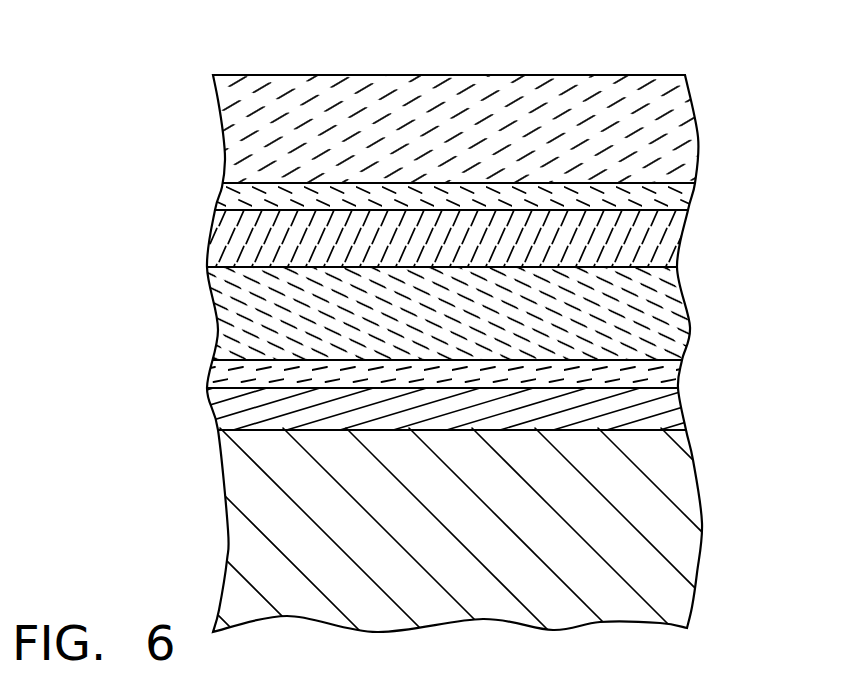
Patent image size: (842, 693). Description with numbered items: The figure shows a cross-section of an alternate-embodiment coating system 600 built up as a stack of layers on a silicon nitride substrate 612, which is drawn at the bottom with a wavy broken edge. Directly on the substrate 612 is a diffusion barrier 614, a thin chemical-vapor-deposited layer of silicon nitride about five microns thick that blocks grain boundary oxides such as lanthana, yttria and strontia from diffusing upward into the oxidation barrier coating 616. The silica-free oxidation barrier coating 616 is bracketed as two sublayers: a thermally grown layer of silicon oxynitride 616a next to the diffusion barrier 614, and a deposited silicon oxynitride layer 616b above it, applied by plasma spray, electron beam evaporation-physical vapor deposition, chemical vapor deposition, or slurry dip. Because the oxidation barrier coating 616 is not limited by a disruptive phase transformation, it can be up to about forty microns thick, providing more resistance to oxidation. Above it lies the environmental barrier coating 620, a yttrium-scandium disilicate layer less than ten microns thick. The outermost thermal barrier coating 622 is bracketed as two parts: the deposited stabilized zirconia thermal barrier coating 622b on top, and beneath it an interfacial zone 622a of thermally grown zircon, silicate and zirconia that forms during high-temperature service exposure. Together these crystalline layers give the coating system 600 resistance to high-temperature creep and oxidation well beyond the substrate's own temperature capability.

The coating system 600 is at (421, 332).
The substrate 612 is at (657, 577).
The diffusion barrier 614 is at (657, 407).
The oxidation barrier coating 616 is at (456, 329).
The thermally grown layer of Si2ON2 616a is at (660, 372).
The deposited Si2ON2 layer 616b is at (660, 318).
The environmental barrier coating 620 is at (647, 240).
The thermal barrier coating 622 is at (462, 143).
The interfacial zone 622a is at (683, 204).
The thermal barrier coating of stabilized zirconia 622b is at (685, 130).